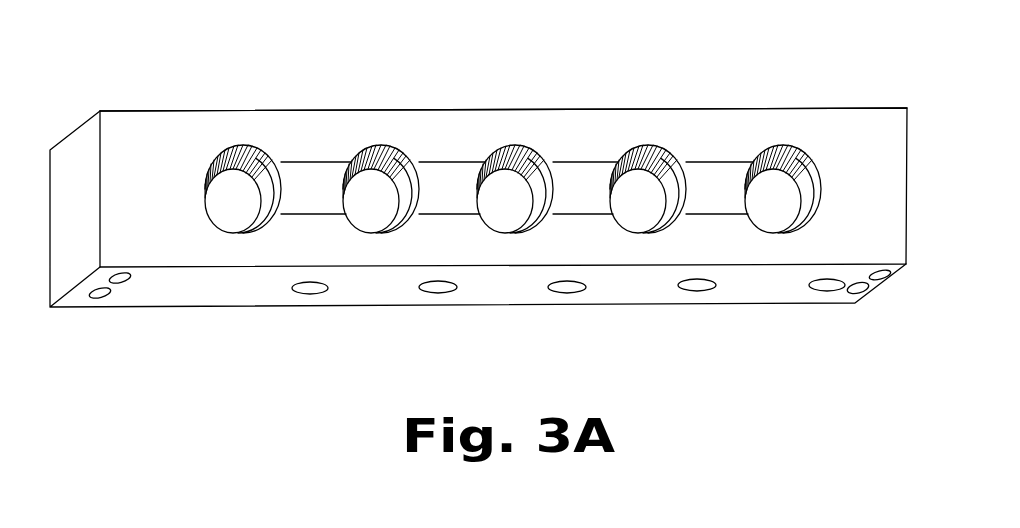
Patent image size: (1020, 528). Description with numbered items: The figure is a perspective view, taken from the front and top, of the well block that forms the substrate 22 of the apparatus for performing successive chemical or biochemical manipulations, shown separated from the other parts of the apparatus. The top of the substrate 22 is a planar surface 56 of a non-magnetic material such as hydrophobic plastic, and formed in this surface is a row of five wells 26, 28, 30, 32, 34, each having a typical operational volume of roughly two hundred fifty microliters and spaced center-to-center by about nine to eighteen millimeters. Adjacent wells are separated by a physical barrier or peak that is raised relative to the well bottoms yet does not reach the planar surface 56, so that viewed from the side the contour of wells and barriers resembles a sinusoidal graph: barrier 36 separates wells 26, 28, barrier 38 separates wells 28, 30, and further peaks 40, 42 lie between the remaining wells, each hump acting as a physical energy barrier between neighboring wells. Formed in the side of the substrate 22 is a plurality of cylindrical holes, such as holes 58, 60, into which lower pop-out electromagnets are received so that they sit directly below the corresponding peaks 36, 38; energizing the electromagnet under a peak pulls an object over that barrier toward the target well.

The substrate 22 is at (187, 298).
The well 26 is at (242, 143).
The well 28 is at (380, 143).
The well 30 is at (513, 142).
The well 32 is at (647, 142).
The well 34 is at (782, 142).
The barrier 36 is at (328, 168).
The barrier 38 is at (467, 168).
The peak 40 is at (598, 168).
The fourth connecting bar 42 is at (733, 168).
The planar surface 56 is at (885, 122).
The hole 58 is at (305, 293).
The hole 60 is at (433, 293).